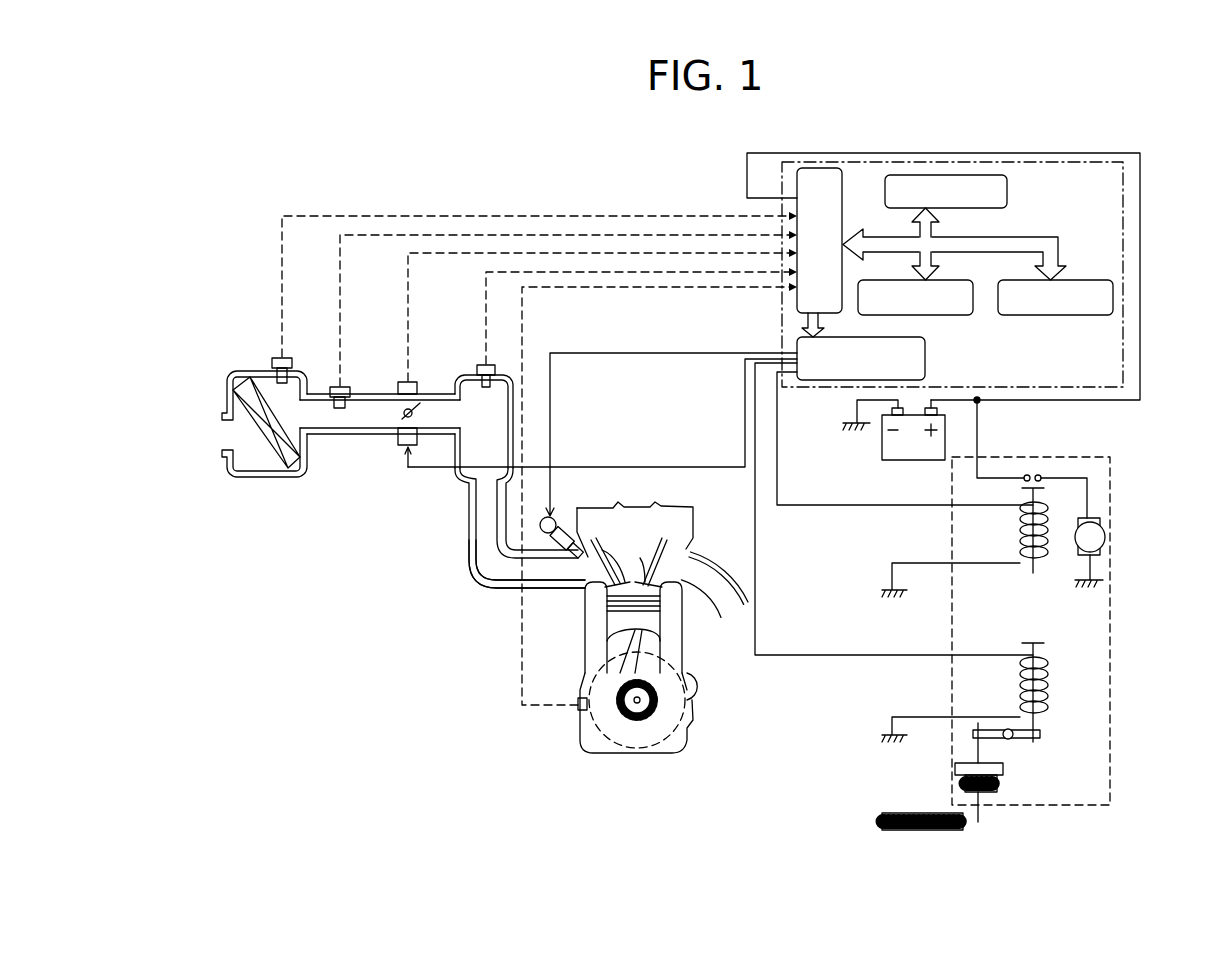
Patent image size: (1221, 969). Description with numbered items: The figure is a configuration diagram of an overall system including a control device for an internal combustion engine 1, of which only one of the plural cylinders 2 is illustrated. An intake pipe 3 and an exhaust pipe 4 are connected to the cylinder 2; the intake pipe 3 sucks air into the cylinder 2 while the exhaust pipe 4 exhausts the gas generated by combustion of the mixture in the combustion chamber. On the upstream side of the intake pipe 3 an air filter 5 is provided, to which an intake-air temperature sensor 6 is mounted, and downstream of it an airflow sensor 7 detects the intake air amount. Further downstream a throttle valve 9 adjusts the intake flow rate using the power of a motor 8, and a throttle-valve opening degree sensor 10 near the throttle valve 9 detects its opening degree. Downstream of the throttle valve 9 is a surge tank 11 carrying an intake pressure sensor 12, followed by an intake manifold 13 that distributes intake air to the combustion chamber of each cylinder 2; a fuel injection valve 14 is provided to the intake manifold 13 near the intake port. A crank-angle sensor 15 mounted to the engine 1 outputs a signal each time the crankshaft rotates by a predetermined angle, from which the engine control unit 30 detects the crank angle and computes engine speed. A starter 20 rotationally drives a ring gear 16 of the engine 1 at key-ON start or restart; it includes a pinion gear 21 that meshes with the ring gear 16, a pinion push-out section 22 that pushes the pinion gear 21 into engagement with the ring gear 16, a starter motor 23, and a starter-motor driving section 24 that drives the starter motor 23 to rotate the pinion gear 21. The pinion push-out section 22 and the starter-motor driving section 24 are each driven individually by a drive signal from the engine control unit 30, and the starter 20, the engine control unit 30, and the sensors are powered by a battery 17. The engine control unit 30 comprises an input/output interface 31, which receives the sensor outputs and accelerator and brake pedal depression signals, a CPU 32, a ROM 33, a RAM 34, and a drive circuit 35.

The internal combustion engine 1 is at (641, 658).
The cylinder 2 is at (682, 637).
The intake pipe 3 is at (340, 435).
The exhaust pipe 4 is at (700, 552).
The air filter 5 is at (233, 477).
The intake-air temperature sensor 6 is at (285, 357).
The airflow sensor 7 is at (342, 386).
The motor 8 is at (406, 447).
The throttle valve 9 is at (403, 417).
The throttle-valve opening degree sensor 10 is at (410, 381).
The surge tank 11 is at (456, 478).
The intake pressure sensor 12 is at (486, 364).
The intake manifold 13 is at (480, 575).
The fuel injection valve 14 is at (557, 516).
The crank-angle sensor 15 is at (577, 708).
The ring gear 16 is at (660, 745).
The battery 17 is at (882, 447).
The starter 20 is at (710, 690).
The pinion gear 21 is at (1003, 772).
The pinion push-out section 22 is at (1043, 712).
The starter motor 23 is at (1105, 543).
The starter-motor driving section 24 is at (1043, 560).
The engine control unit (ECU) 30 is at (780, 314).
The input/output interface 31 is at (842, 178).
The CPU (microprocessor) 32 is at (1007, 195).
The read-only memory (ROM) 33 is at (1080, 280).
The random-access memory (RAM) 34 is at (935, 315).
The drive circuit 35 is at (925, 368).